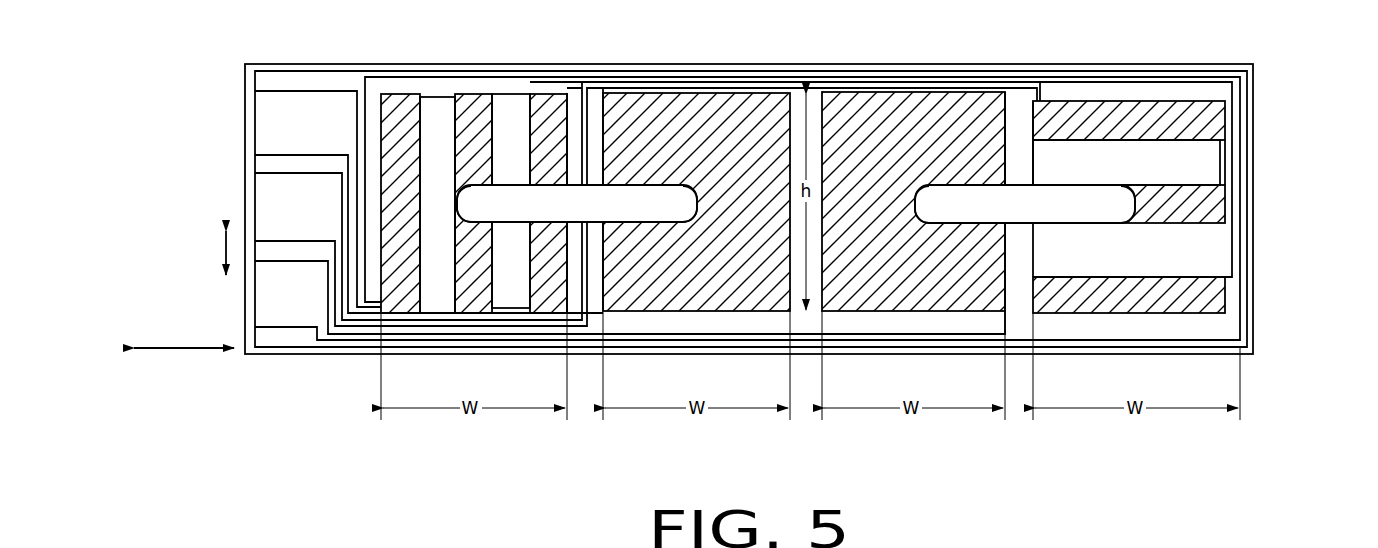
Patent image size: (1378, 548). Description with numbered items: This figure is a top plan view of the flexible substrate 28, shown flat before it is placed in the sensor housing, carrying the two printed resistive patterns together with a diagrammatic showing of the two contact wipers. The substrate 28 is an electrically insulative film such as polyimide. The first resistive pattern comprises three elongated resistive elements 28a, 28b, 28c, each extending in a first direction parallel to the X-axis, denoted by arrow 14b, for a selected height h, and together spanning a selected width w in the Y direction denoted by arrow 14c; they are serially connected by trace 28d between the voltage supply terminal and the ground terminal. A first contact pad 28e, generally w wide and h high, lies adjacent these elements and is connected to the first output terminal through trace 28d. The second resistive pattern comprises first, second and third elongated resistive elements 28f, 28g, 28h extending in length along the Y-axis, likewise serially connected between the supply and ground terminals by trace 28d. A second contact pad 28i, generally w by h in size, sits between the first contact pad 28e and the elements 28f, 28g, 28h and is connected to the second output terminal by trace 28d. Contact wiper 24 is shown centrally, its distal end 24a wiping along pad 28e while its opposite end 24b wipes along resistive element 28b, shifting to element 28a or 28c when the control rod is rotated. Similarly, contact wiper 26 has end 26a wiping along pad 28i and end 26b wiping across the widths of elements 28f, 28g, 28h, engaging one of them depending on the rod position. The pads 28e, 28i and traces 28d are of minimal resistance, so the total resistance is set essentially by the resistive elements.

The arrow 14b is at (222, 249).
The arrow 14c is at (193, 353).
The contact wiper 24 is at (520, 230).
The distal end of contact wiper 24a is at (683, 197).
The opposite end of wiper 24b is at (470, 205).
The contact wiper 26 is at (1036, 181).
The contact wiper end 26a is at (925, 195).
The contact wiper end 26b is at (1120, 200).
The flexible substrate 28 is at (1142, 332).
The elongated resistive element 28a is at (398, 105).
The elongated resistive element 28b is at (472, 105).
The elongated resistive element 28c is at (552, 105).
The trace 28d is at (438, 97).
The first contact pad 28e is at (740, 118).
The elongated resistive element 28f is at (1205, 118).
The elongated resistive element 28g is at (1208, 205).
The elongated resistive element 28h is at (1200, 298).
The second contact pad 28i is at (936, 120).